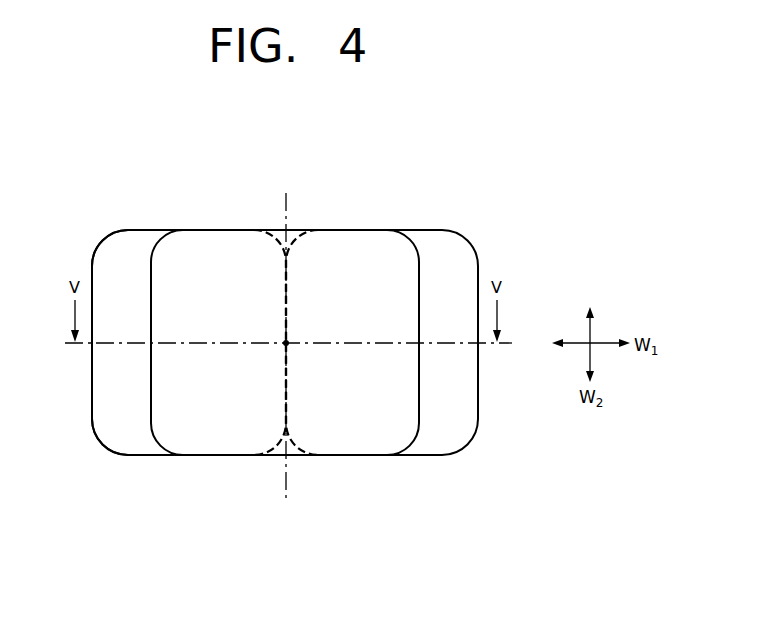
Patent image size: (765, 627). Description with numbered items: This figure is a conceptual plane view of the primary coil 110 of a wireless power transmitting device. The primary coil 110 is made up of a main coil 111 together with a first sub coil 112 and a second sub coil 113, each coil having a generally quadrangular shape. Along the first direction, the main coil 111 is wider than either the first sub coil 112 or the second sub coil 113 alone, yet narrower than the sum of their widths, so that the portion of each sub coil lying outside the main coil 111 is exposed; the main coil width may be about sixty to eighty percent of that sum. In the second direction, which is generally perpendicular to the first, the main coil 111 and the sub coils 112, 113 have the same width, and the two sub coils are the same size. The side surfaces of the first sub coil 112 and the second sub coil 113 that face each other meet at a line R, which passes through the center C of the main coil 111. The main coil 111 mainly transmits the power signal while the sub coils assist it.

The primary coil 110 is at (98, 216).
The main coil 111 is at (157, 446).
The first sub coil 112 is at (457, 452).
The second sub coil 113 is at (112, 451).
The center of the main coil C is at (286, 343).
The line R is at (288, 205).